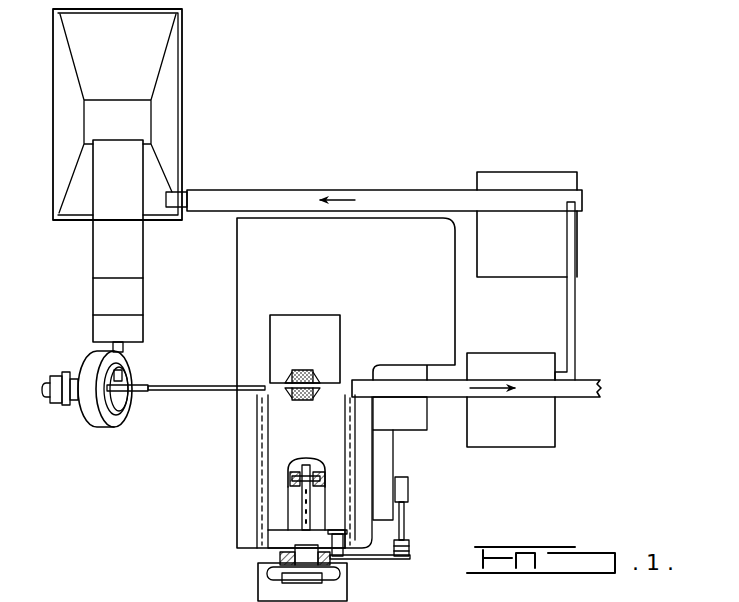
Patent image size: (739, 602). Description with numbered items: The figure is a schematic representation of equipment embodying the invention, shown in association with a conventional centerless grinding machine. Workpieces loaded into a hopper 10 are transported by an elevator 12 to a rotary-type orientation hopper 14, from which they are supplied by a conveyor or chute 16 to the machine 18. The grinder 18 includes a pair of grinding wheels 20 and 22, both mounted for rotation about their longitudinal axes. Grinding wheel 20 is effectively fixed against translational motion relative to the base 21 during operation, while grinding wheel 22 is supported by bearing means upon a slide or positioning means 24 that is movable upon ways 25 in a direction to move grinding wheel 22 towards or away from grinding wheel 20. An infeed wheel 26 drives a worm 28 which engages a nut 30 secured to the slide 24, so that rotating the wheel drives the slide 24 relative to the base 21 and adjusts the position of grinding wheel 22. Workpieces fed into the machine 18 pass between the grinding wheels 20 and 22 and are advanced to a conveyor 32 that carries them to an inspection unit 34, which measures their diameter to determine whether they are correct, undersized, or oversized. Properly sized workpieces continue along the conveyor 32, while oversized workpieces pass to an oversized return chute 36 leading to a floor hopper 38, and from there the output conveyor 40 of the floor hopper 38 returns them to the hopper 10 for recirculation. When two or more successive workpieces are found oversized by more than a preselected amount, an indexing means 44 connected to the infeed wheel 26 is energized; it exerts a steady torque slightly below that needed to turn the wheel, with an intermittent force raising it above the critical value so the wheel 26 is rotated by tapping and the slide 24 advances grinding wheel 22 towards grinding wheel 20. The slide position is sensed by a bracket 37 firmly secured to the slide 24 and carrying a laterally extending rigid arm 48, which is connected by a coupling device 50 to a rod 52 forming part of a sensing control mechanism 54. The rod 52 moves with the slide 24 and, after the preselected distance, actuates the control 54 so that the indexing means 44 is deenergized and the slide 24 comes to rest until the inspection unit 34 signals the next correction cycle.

The hopper 10 is at (190, 80).
The elevator 12 is at (133, 253).
The rotary-type orientation hopper 14 is at (92, 427).
The conveyor or chute 16 is at (180, 387).
The machine 18 is at (236, 288).
The grinding wheel 20 is at (307, 370).
The base 21 is at (401, 307).
The grinding wheel 22 is at (303, 402).
The slide or positioning means 24 is at (282, 439).
The ways 25 is at (262, 470).
The infeed wheel 26 is at (290, 581).
The worm 28 is at (298, 512).
The nut 30 is at (310, 472).
The conveyor 32 is at (438, 380).
The inspection unit 34 is at (558, 433).
The oversized return chute 36 is at (577, 341).
The bracket 37 is at (342, 540).
The floor hopper 38 is at (552, 178).
The output conveyor 40 is at (400, 194).
The indexing means 44 is at (322, 580).
The rigid arm 48 is at (387, 562).
The coupling device 50 is at (411, 548).
The rod 52 is at (404, 524).
The sensing control mechanism 54 is at (411, 490).